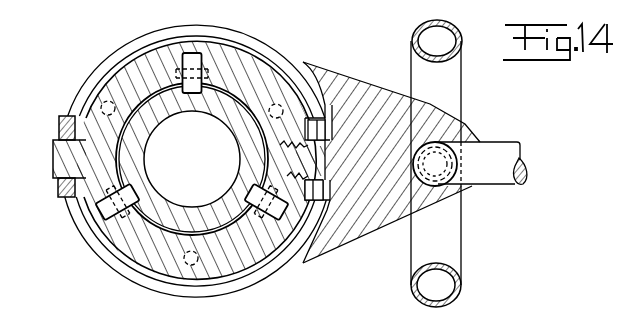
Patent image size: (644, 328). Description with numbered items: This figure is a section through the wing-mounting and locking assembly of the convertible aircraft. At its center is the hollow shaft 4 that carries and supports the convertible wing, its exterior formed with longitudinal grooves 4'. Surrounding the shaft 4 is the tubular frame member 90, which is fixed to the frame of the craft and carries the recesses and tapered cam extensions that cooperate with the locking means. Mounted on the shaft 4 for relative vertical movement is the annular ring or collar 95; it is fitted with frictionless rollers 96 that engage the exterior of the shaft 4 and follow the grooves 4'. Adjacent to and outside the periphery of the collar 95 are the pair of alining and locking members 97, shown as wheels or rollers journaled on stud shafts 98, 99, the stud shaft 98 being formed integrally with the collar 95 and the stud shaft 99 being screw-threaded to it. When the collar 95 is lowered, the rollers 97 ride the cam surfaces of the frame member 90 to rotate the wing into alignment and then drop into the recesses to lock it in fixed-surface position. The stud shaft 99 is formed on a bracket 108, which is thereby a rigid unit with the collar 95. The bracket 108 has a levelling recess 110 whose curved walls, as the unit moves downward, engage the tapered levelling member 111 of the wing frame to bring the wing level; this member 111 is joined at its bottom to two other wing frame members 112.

The hollow shaft 4 is at (195, 192).
The grooves 4' is at (192, 159).
The tubular frame member 90 is at (139, 283).
The annular ring or collar 95 is at (124, 260).
The frictionless rollers 96 is at (110, 203).
The alining and locking members 97 is at (58, 187).
The stud shaft 98 is at (53, 159).
The stud shaft 99 is at (325, 158).
The bracket 108 is at (354, 247).
The levelling recess 110 is at (472, 188).
The levelling member 111 is at (504, 180).
The wing frame members 112 is at (450, 78).